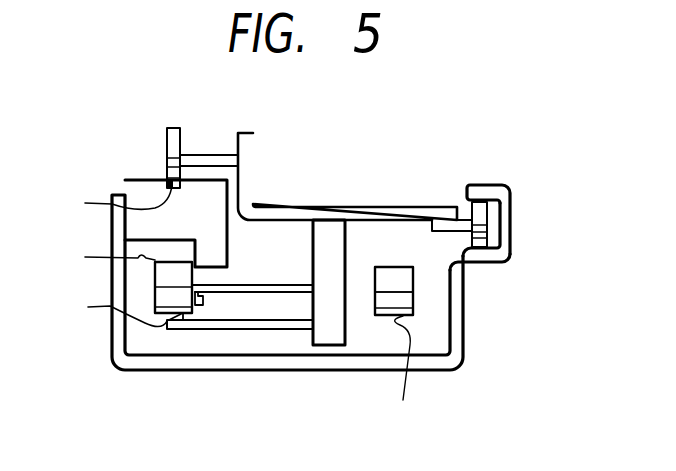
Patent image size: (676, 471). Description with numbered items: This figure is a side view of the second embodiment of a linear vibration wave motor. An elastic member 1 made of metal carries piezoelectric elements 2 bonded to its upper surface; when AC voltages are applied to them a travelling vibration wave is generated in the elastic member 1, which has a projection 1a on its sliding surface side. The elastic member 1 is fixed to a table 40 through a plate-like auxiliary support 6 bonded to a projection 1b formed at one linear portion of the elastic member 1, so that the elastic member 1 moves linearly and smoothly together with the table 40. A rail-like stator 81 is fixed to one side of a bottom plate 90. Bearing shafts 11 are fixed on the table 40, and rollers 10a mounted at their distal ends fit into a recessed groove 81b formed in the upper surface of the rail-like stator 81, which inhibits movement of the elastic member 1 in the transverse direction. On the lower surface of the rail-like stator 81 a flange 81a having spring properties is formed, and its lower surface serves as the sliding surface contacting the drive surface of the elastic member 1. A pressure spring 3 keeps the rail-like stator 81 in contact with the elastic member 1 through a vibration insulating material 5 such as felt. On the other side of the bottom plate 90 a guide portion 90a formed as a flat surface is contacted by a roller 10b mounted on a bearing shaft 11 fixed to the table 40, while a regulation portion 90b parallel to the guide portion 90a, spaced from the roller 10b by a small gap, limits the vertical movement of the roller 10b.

The elastic member 1 is at (411, 302).
The projection 1a is at (403, 280).
The projection 1b is at (198, 308).
The piezoelectric elements 2 is at (405, 373).
The pressure spring 3 is at (233, 329).
The vibration insulating material 5 is at (127, 294).
The plate-like auxiliary support 6 is at (247, 285).
The rollers 10a is at (176, 128).
The roller 10b is at (486, 216).
The bearing shafts 11 is at (210, 156).
The table 40 is at (290, 216).
The rail-like stator 81 is at (143, 184).
The flange 81a is at (97, 259).
The recessed groove 81b is at (104, 203).
The bottom plate 90 is at (310, 369).
The guide portion 90a is at (492, 257).
The regulation portion 90b is at (483, 188).